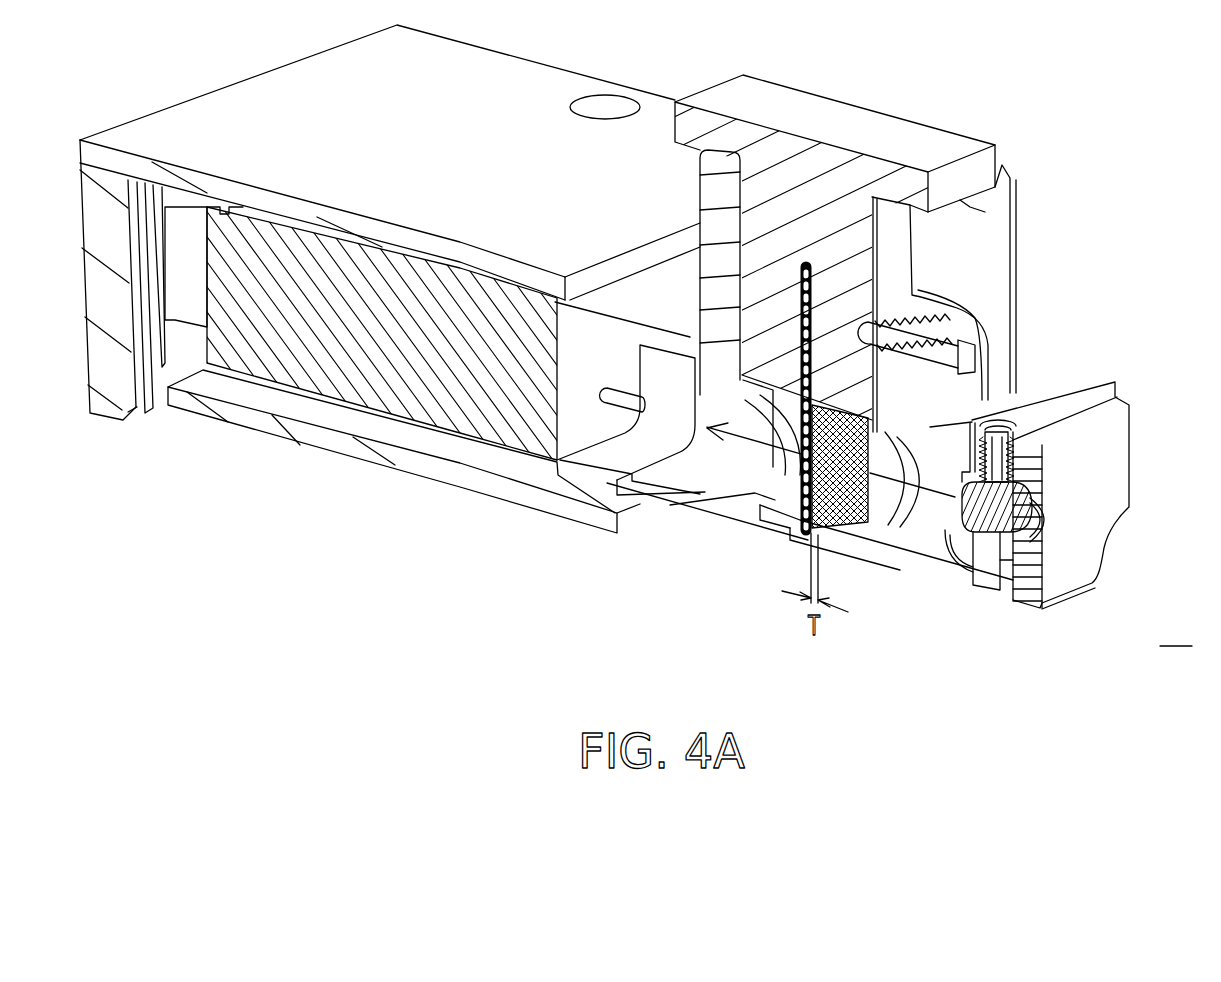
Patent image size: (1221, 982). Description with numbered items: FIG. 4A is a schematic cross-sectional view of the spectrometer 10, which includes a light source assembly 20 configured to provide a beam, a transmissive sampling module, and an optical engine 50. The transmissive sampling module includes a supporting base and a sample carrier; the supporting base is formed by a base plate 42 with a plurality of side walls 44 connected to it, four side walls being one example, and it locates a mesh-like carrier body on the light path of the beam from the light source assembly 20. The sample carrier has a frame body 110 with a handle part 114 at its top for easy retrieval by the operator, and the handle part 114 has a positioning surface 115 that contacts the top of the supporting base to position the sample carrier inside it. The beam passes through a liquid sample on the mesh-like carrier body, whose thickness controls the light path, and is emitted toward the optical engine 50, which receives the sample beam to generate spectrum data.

The spectrometer 10 is at (622, 335).
The light source assembly 20 is at (1100, 397).
The base plate 42 is at (915, 567).
The side wall 44 is at (1000, 200).
The optical engine 50 is at (435, 470).
The frame body 110 is at (847, 248).
The handle part 114 is at (992, 158).
The positioning surface 115 is at (967, 214).